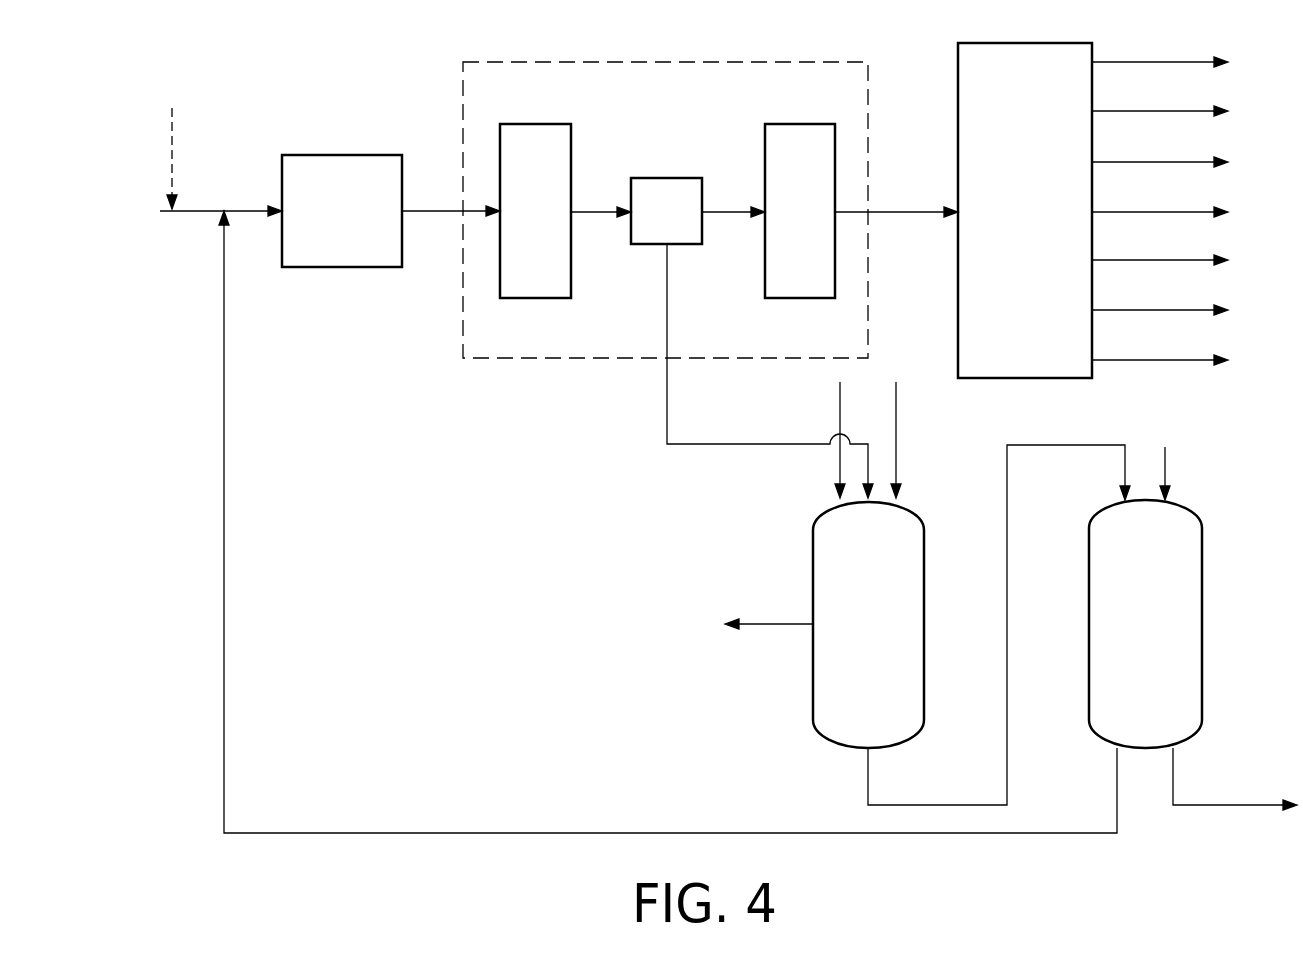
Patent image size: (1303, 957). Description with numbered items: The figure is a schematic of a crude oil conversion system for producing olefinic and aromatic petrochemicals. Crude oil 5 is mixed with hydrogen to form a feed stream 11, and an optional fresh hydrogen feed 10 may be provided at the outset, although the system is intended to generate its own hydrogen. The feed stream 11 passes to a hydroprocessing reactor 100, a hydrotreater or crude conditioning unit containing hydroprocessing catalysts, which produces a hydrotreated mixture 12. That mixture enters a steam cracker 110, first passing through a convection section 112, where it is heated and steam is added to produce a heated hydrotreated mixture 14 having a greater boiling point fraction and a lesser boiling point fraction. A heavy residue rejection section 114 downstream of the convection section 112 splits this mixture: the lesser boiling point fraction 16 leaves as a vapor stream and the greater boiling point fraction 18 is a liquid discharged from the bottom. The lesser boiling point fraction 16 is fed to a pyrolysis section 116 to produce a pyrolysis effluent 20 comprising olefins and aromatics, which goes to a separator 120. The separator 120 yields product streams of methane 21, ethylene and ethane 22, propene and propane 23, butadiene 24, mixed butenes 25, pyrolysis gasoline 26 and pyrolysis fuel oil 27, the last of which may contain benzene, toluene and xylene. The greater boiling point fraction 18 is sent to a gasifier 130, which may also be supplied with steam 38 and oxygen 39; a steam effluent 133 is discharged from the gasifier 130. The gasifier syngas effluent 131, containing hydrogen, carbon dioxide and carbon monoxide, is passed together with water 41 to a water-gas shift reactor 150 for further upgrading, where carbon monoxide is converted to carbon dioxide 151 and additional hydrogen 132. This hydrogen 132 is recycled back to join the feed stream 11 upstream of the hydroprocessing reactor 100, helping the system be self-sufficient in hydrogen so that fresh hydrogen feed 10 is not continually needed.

The crude oil 5 is at (192, 211).
The hydrogen feed 10 is at (172, 131).
The feed stream 11 is at (242, 211).
The hydrotreated mixture 12 is at (436, 211).
The heated hydrotreated mixture 14 is at (597, 212).
The lesser boiling point fraction 16 is at (730, 212).
The greater boiling point fraction 18 is at (665, 415).
The pyrolysis effluent 20 is at (905, 212).
The methane 21 is at (1123, 62).
The ethylene and ethane 22 is at (1123, 111).
The propene and propane 23 is at (1123, 162).
The butadiene 24 is at (1123, 212).
The mixed butenes 25 is at (1123, 260).
The pyrolysis gasoline 26 is at (1123, 310).
The pyrolysis fuel oil 27 is at (1123, 360).
The steam 38 is at (840, 405).
The oxygen 39 is at (896, 440).
The water 41 is at (1165, 457).
The hydroprocessing reactor 100 is at (366, 225).
The steam cracker 110 is at (840, 62).
The convection section 112 is at (560, 225).
The heavy residue rejection section 114 is at (691, 225).
The pyrolysis section 116 is at (824, 225).
The separator 120 is at (1049, 225).
The gasifier 130 is at (893, 642).
The gasifier syngas effluent 131 is at (1055, 445).
The hydrogen 132 is at (572, 833).
The steam effluent 133 is at (777, 624).
The water-gas shift reactor 150 is at (1169, 641).
The carbon dioxide 151 is at (1222, 805).